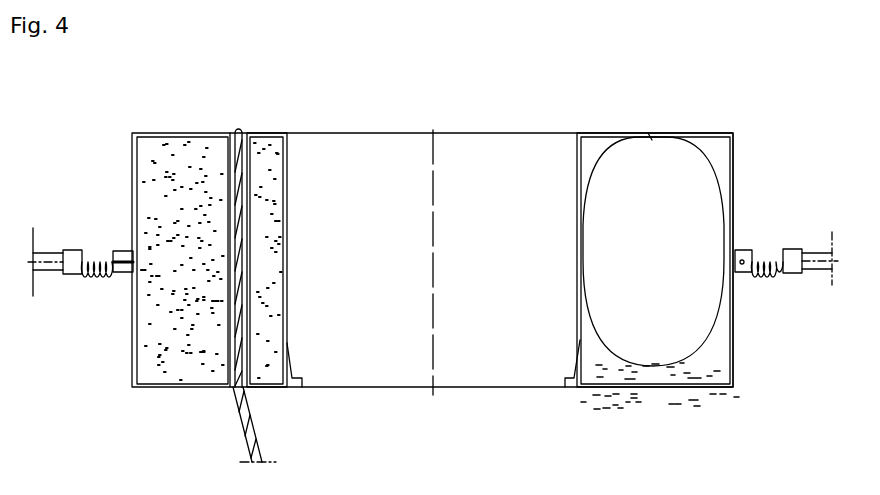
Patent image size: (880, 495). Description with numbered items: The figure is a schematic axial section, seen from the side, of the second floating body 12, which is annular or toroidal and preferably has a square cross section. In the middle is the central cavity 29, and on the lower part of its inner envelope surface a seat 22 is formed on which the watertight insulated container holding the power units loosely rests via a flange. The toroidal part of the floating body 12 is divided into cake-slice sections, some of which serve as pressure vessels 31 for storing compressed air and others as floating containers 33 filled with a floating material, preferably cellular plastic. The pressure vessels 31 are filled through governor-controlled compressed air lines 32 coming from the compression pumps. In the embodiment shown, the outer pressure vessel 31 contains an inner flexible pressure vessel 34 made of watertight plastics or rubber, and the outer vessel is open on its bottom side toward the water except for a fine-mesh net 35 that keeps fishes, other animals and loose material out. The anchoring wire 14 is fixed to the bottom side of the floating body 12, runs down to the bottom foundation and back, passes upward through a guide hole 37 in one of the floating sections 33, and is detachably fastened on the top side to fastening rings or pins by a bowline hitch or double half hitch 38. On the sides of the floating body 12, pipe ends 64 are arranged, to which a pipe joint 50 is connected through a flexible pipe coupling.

The second floating body 12 is at (562, 102).
The anchoring wire 14 is at (255, 435).
The seat 22 is at (292, 362).
The central cavity 29 is at (482, 145).
The pressure vessel 31 is at (712, 133).
The compressed air line 32 is at (650, 135).
The floating container 33 is at (265, 135).
The inner flexible pressure vessel 34 is at (712, 170).
The fine-mesh net 35 is at (658, 386).
The guide hole 37 is at (234, 130).
The double half hitch 38 is at (241, 128).
The pipe joint 50 is at (53, 243).
The pipe end 64 is at (132, 250).